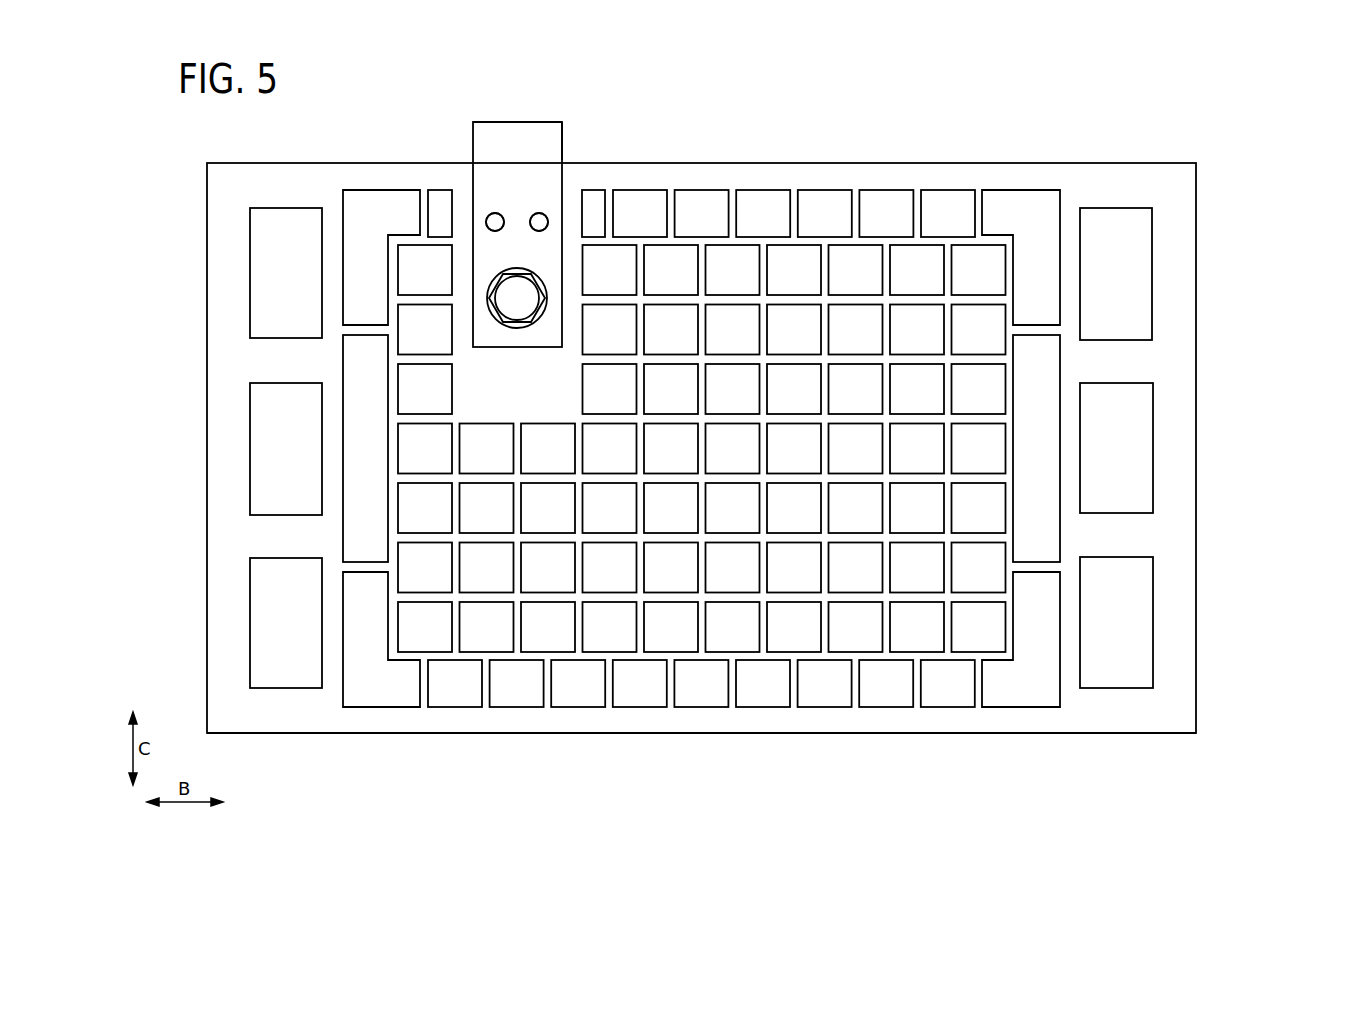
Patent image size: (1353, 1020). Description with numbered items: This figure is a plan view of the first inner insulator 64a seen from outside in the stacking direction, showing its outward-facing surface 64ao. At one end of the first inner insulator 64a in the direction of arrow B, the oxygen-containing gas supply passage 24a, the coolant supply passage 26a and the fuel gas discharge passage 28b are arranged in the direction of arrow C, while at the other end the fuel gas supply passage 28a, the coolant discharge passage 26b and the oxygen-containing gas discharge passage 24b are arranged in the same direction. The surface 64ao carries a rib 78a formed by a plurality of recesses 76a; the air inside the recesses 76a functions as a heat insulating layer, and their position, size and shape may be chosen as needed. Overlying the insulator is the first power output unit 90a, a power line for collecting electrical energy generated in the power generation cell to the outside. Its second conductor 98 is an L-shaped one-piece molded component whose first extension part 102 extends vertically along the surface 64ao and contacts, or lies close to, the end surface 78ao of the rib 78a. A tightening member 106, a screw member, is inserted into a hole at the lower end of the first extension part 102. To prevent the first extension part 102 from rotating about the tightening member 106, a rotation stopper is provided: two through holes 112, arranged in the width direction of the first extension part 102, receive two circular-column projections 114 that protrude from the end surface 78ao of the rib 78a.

The first inner insulator 64a is at (1142, 162).
The surface of the first inner insulator 64ao is at (1133, 714).
The rib 78a is at (787, 213).
The recess 76a is at (822, 208).
The end surface of the rib 78ao is at (455, 437).
The fuel gas supply passage 28a is at (265, 246).
The coolant discharge passage 26b is at (267, 431).
The oxygen-containing gas discharge passage 24b is at (265, 660).
The oxygen-containing gas supply passage 24a is at (1137, 245).
The coolant supply passage 26a is at (1133, 462).
The fuel gas discharge passage 28b is at (1137, 616).
The first extension part 102 is at (550, 145).
The second conductor 98 is at (526, 120).
The first power output unit 90a is at (562, 122).
The projection 114 is at (538, 212).
The through hole 112 is at (537, 228).
The tightening member 106 is at (515, 303).